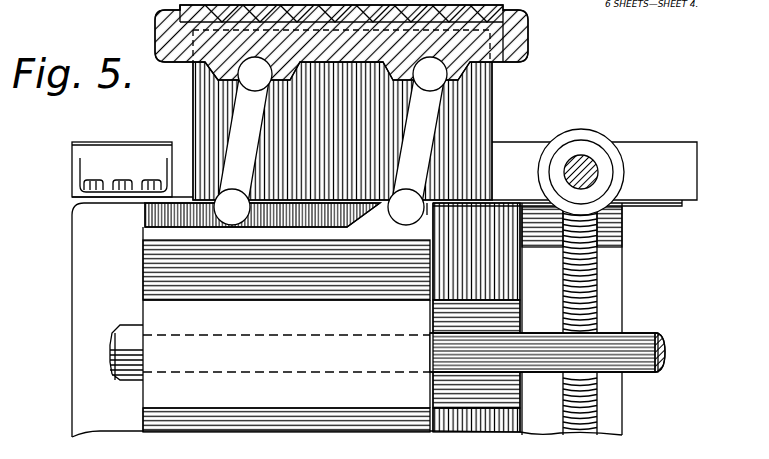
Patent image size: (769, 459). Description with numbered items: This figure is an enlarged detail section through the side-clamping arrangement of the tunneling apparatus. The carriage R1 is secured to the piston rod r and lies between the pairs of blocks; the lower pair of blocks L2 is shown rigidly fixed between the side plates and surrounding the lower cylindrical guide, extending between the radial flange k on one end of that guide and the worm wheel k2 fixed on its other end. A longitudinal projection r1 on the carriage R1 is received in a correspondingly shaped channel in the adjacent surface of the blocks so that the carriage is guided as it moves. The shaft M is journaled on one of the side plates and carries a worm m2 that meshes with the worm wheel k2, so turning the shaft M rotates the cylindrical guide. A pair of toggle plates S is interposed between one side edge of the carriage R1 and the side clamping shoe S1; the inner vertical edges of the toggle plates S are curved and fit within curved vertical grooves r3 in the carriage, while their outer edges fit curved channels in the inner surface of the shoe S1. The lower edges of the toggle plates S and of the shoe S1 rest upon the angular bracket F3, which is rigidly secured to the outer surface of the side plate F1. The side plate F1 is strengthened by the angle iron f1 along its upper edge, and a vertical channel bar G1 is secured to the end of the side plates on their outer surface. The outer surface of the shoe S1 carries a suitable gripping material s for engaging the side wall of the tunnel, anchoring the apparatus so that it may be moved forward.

The gripping material s is at (155, 22).
The side clamping shoe S1 is at (513, 45).
The toggle plates S is at (331, 140).
The angular bracket F3 is at (480, 118).
The shaft M is at (588, 165).
The worm m2 is at (614, 173).
The angle iron f1 is at (690, 170).
The side plate F1 is at (682, 207).
The vertical channel bar G1 is at (75, 178).
The curved vertical grooves r3 is at (400, 226).
The radial flange k is at (251, 317).
The carriage R1 is at (286, 270).
The pair of blocks L2 is at (452, 280).
The worm wheel k2 is at (615, 298).
The piston rod r is at (645, 343).
The longitudinal projection r1 is at (286, 383).